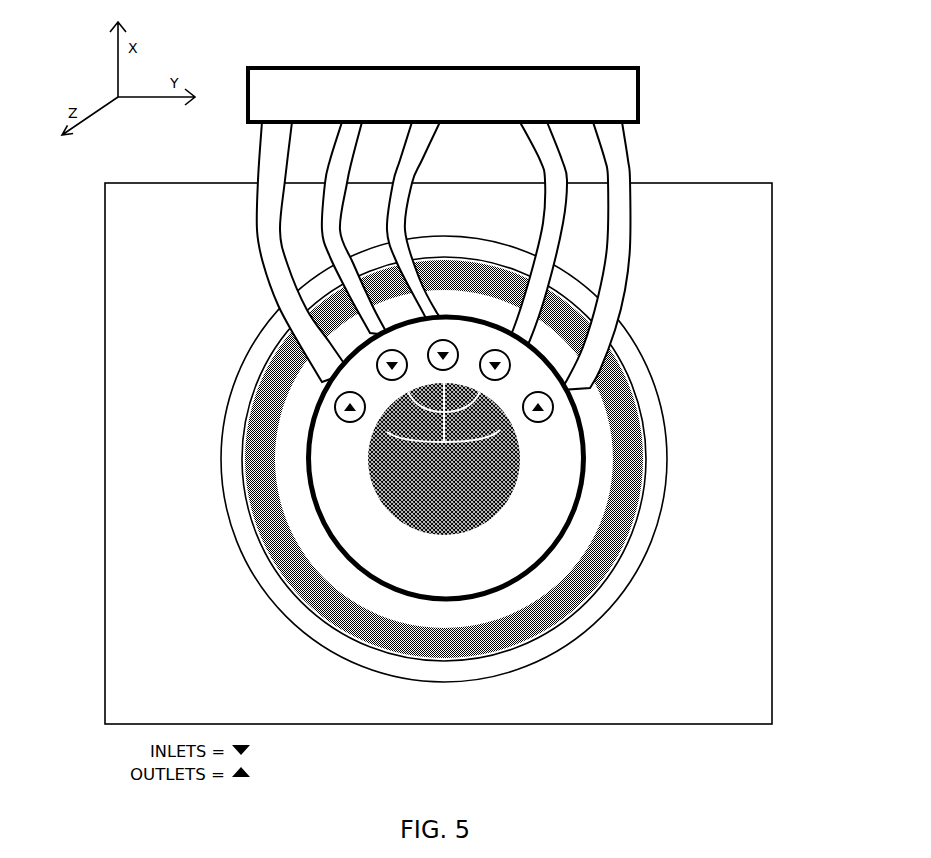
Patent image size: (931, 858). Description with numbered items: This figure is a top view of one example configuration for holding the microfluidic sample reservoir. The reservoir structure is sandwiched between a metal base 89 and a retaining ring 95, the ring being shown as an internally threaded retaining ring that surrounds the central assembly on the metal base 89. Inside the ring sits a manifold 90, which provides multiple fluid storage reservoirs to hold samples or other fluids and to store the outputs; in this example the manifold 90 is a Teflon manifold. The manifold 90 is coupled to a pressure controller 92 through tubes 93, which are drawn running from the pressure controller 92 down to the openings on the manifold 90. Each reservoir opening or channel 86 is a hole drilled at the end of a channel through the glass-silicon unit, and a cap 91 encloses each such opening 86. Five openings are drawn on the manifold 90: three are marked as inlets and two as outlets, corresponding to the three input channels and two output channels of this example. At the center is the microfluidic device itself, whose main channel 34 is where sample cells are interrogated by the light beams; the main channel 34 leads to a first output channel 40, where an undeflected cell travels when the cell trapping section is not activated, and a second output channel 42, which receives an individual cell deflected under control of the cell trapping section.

The pressure controller 92 is at (638, 97).
The tubes 93 is at (630, 157).
The cap 91 is at (336, 396).
The holes 86 is at (337, 414).
The manifold 90 is at (568, 420).
The second output channel 42 is at (498, 432).
The main channel 34 is at (445, 431).
The first output channel 40 is at (386, 433).
The retaining ring 95 is at (618, 560).
The metal base 89 is at (711, 793).